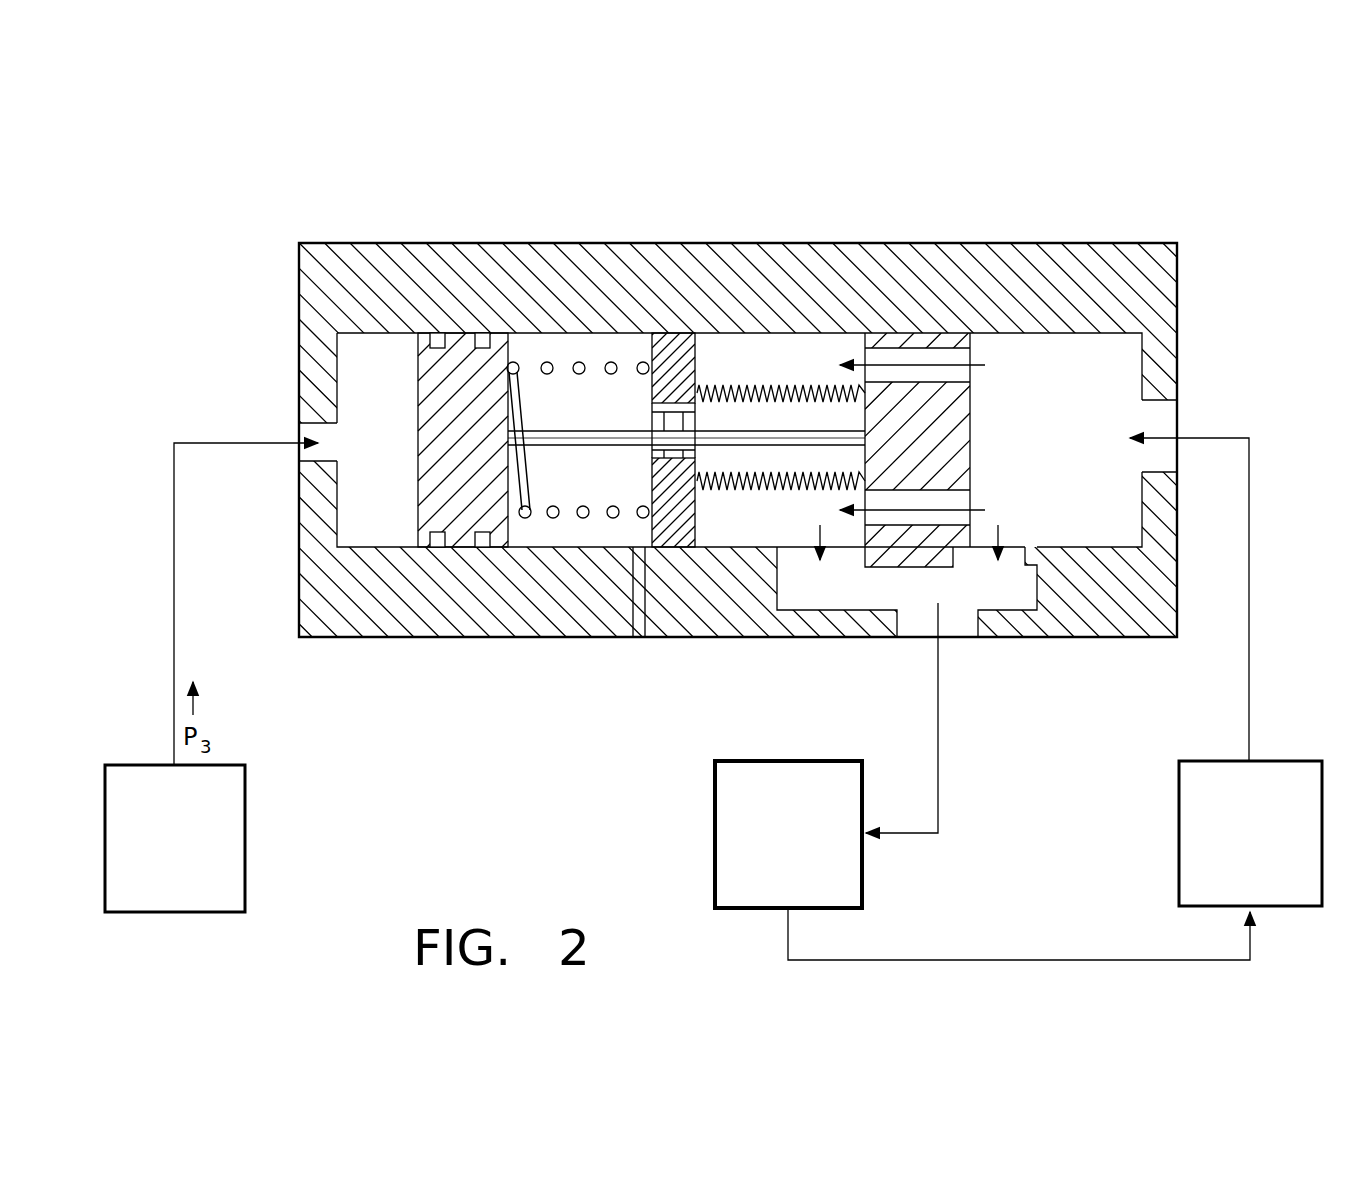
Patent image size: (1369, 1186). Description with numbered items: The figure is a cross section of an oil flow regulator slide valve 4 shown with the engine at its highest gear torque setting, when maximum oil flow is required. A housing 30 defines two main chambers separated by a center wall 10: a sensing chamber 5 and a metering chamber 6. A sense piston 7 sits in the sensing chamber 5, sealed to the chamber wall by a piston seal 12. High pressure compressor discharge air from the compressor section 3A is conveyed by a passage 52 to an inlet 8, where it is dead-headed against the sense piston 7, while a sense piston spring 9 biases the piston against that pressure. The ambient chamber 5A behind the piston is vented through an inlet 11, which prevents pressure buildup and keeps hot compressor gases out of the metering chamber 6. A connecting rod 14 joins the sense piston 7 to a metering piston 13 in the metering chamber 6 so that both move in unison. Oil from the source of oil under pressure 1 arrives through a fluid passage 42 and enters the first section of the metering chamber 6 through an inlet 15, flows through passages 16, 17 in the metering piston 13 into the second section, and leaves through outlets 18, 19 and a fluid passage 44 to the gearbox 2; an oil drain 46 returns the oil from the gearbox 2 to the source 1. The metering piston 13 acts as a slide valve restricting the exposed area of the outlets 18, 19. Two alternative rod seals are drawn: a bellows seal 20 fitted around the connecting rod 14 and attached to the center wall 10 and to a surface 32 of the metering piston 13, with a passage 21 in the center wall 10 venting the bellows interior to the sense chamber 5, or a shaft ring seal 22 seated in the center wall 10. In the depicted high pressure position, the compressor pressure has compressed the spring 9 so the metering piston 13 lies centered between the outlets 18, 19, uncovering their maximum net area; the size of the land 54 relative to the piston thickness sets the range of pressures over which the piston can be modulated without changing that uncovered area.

The source of oil under pressure 1 is at (1268, 853).
The gearbox 2 is at (806, 853).
The compressor section 3A is at (192, 858).
The oil flow regulator slide valve 4 is at (1180, 290).
The sensing chamber 5 is at (348, 380).
The ambient chamber 5A is at (540, 528).
The metering chamber 6 is at (1140, 375).
The sense piston 7 is at (475, 452).
The inlet 8 is at (300, 452).
The sense piston spring 9 is at (583, 358).
The center wall 10 is at (688, 508).
The inlet 11 is at (640, 636).
The piston seal 12 is at (440, 340).
The metering piston 13 is at (898, 450).
The connecting rod 14 is at (611, 446).
The inlet 15 is at (1150, 425).
The passage 16 is at (972, 368).
The passage 17 is at (968, 498).
The outlet 18 is at (793, 553).
The outlet 19 is at (990, 512).
The bellows seal 20 is at (738, 388).
The passage 21 is at (698, 352).
The shaft ring seal 22 is at (650, 478).
The housing 30 is at (945, 265).
The surface 32 is at (862, 388).
The fluid passage 42 is at (1249, 668).
The fluid passage 44 is at (940, 690).
The oil drain 46 is at (990, 960).
The passage 52 is at (174, 620).
The land 54 is at (917, 565).